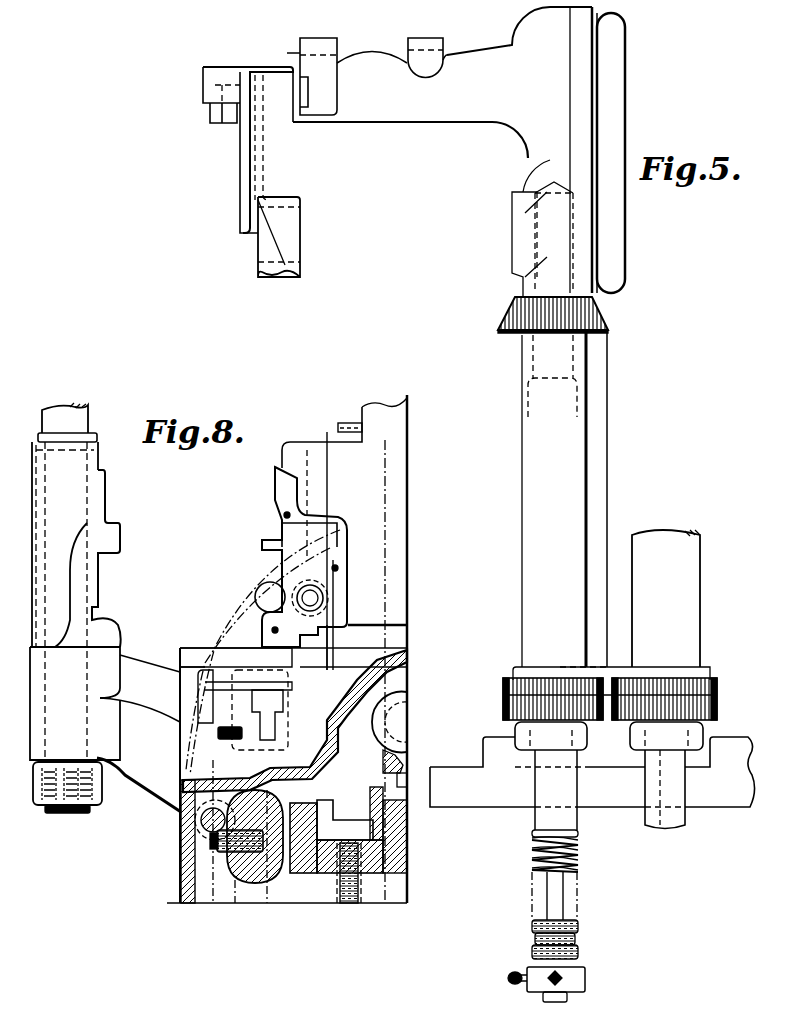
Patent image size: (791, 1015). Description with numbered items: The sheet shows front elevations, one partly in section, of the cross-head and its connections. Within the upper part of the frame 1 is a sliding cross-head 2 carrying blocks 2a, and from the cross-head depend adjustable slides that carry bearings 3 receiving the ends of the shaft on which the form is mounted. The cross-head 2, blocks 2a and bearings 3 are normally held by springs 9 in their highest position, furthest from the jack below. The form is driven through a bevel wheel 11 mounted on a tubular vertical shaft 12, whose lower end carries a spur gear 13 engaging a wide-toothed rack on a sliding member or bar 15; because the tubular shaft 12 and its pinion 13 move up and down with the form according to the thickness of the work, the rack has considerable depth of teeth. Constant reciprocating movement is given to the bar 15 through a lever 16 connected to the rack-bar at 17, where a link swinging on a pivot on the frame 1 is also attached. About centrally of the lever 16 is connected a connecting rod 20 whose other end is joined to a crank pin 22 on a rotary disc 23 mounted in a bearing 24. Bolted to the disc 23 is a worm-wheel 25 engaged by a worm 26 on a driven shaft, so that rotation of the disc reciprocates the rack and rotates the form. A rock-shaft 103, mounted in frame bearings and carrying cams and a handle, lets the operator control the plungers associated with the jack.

In FIG. 5, the frame 1 is at (713, 793).
In FIG. 8, the frame 1 is at (140, 757).
In FIG. 5, the cross-head 2 is at (455, 98).
In FIG. 5, the blocks 2a is at (328, 47).
In FIG. 5, the bearings 3 is at (293, 270).
In FIG. 5, the springs 9 is at (577, 860).
In FIG. 5, the bevel wheel 11 is at (514, 310).
In FIG. 5, the tubular vertical shaft 12 is at (540, 458).
In FIG. 8, the tubular vertical shaft 12 is at (340, 437).
In FIG. 5, the spur gear 13 is at (504, 697).
In FIG. 8, the spur gear 13 is at (332, 667).
In FIG. 8, the sliding member or bar 15 is at (193, 657).
In FIG. 8, the lever 16 is at (253, 710).
In FIG. 8, the connection point of lever to rack-bar 17 is at (251, 662).
In FIG. 8, the connecting rod 20 is at (260, 885).
In FIG. 8, the crank pin 22 is at (240, 857).
In FIG. 8, the rotary disc 23 is at (305, 873).
In FIG. 8, the bearing 24 is at (367, 853).
In FIG. 8, the worm-wheel 25 is at (392, 763).
In FIG. 8, the worm 26 is at (388, 737).
In FIG. 8, the rock-shaft 103 is at (310, 590).